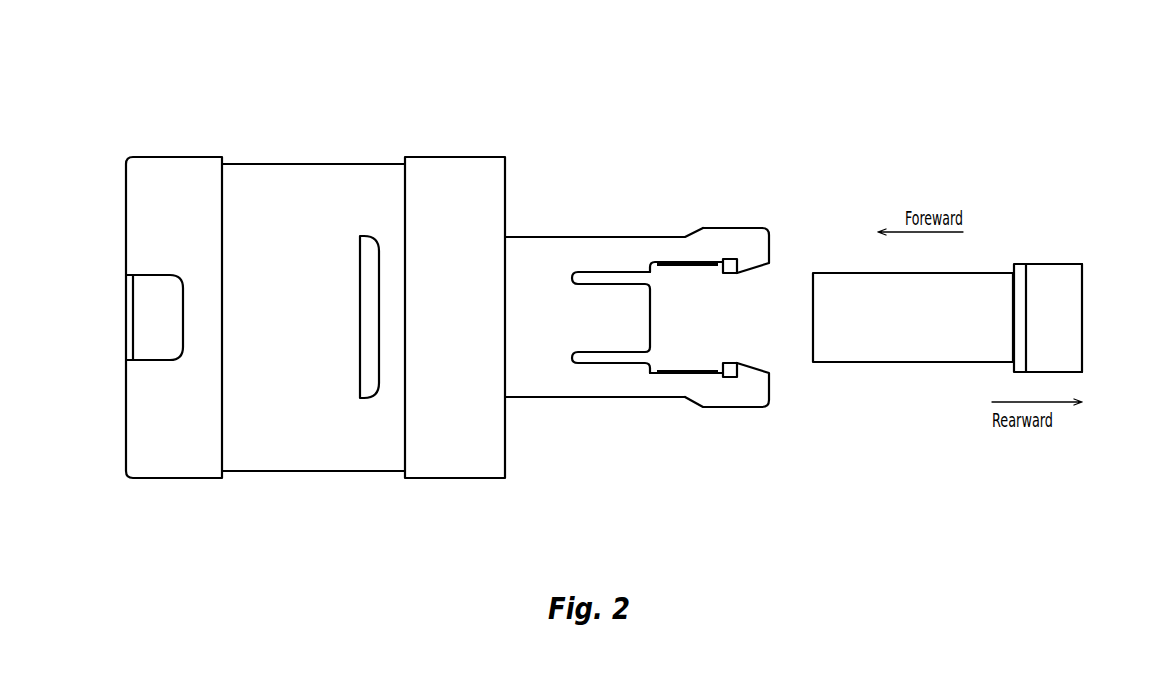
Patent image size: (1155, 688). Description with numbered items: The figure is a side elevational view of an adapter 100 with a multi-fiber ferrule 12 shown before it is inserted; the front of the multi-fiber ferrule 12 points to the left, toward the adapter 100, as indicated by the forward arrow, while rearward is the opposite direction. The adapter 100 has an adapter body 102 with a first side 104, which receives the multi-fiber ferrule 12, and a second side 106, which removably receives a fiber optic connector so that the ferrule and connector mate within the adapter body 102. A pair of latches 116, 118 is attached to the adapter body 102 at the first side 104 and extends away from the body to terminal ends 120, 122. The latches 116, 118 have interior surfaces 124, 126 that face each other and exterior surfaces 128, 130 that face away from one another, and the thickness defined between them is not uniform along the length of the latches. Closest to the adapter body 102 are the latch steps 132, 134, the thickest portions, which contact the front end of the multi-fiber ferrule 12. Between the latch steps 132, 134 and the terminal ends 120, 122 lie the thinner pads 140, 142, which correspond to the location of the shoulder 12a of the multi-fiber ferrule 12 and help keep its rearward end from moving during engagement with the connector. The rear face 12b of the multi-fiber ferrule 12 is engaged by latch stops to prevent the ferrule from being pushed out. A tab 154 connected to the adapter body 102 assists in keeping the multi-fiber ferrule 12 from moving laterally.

The multi-fiber ferrule 12 is at (1070, 236).
The shoulder 12a is at (1067, 317).
The rear face 12b is at (1082, 277).
The adapter 100 is at (522, 97).
The adapter body 102 is at (308, 164).
The first side 104 is at (624, 164).
The second side 106 is at (120, 90).
The latch 116 is at (698, 229).
The latch 118 is at (700, 408).
The terminal end 120 is at (780, 241).
The terminal end 122 is at (769, 393).
The interior surface 124 is at (727, 259).
The interior surface 126 is at (730, 378).
The exterior surface 128 is at (532, 237).
The exterior surface 130 is at (545, 401).
The latch step 132 is at (593, 271).
The latch step 134 is at (600, 364).
The pad 140 is at (682, 267).
The pad 142 is at (698, 368).
The tab 154 is at (582, 328).